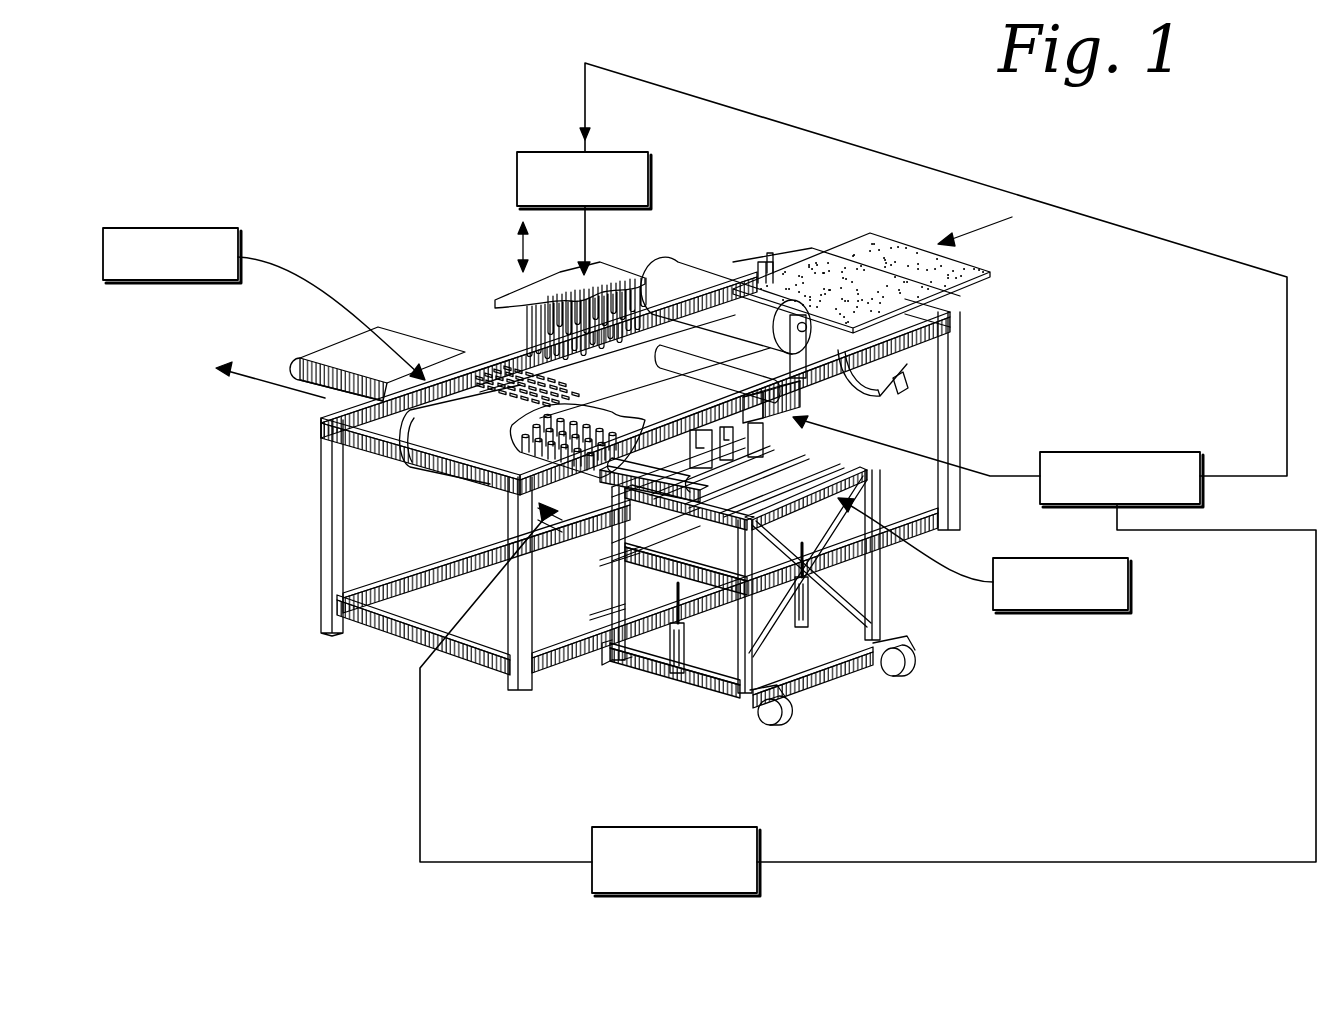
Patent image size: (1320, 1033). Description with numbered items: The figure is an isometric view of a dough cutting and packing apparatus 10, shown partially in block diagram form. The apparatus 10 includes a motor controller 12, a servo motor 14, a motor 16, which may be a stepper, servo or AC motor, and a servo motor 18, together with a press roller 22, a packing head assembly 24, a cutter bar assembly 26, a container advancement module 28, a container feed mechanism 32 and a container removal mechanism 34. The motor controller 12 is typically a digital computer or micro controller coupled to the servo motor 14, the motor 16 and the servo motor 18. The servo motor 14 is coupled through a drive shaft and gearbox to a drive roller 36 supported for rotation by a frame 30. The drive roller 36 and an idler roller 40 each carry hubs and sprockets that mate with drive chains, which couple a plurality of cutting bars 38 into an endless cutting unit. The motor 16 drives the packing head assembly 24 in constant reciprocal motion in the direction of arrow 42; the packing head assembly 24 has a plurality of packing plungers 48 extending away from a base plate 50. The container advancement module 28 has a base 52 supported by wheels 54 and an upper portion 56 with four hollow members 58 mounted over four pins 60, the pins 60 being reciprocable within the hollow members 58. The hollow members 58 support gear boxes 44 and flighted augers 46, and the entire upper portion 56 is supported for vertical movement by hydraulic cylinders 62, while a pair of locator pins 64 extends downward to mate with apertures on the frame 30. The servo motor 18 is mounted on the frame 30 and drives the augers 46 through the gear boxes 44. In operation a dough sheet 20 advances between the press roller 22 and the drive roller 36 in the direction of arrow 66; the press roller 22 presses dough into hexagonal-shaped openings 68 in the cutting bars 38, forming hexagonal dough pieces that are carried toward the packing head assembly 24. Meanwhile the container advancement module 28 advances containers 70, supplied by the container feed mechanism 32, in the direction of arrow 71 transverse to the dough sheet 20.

The dough cutting and packing apparatus 10 is at (357, 159).
The motor controller 12 is at (1200, 494).
The servo motor 14 is at (757, 842).
The motor 16 is at (650, 163).
The servo motor 18 is at (779, 420).
The dough sheet 20 is at (985, 268).
The press roller 22 is at (704, 262).
The packing head assembly 24 is at (511, 299).
The cutter bar assembly 26 is at (901, 390).
The container advancement module 28 is at (882, 598).
The frame 30 is at (320, 472).
The container feed mechanism 32 is at (1128, 600).
The container removal mechanism 34 is at (175, 228).
The drive roller 36 is at (683, 450).
The cutting bars 38 is at (703, 357).
The idler roller 40 is at (876, 394).
The arrow 42 is at (519, 240).
The gear boxes 44 is at (636, 540).
The flighted augers 46 is at (545, 517).
The packing plungers 48 is at (523, 320).
The base plate 50 is at (594, 265).
The base 52 is at (840, 692).
The wheels 54 is at (903, 672).
The upper portion 56 is at (676, 680).
The hollow members 58 is at (718, 678).
The pins 60 is at (727, 656).
The hydraulic cylinders 62 is at (637, 660).
The locator pins 64 is at (610, 630).
The arrow 66 is at (990, 222).
The hexagonal-shaped openings 68 is at (540, 410).
The containers 70 is at (650, 412).
The arrow 71 is at (270, 383).